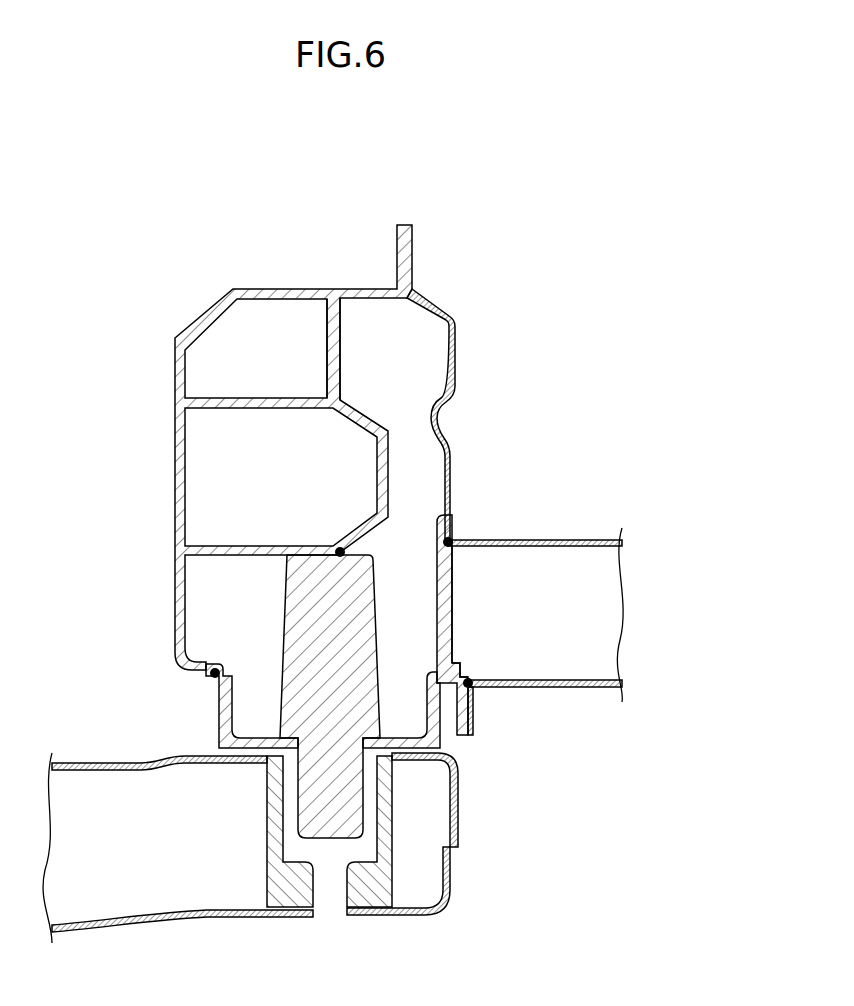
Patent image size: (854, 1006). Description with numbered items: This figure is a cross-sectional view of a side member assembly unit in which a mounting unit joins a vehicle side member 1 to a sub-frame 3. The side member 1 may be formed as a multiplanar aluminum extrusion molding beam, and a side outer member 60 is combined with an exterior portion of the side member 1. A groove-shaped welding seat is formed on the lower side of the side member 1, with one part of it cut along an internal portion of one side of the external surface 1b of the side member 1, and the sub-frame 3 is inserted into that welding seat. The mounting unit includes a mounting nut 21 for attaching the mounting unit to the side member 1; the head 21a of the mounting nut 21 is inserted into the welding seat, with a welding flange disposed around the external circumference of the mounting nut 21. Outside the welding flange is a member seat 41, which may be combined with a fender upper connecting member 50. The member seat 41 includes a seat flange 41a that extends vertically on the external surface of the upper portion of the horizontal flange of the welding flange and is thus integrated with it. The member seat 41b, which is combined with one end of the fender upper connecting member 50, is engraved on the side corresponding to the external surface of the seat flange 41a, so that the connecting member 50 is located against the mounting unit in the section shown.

The side member 1 is at (178, 472).
The external surface 1b is at (344, 354).
The sub-frame 3 is at (112, 924).
The mounting nut 21 is at (268, 656).
The head 21a is at (283, 624).
The member seat 41 is at (458, 560).
The seat flange 41a is at (454, 640).
The member seat 41b is at (466, 607).
The fender upper connecting member 50 is at (593, 690).
The side outer member 60 is at (452, 452).